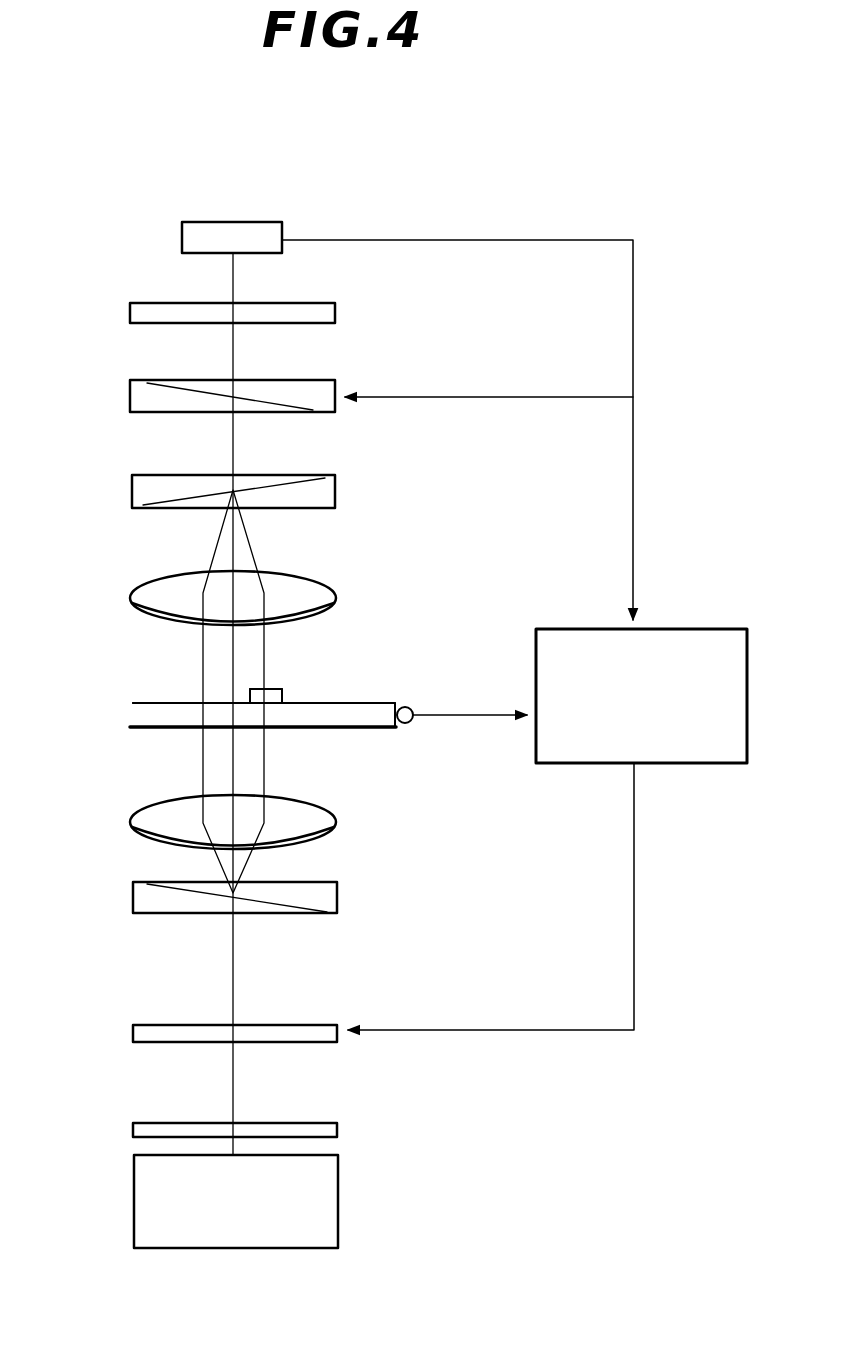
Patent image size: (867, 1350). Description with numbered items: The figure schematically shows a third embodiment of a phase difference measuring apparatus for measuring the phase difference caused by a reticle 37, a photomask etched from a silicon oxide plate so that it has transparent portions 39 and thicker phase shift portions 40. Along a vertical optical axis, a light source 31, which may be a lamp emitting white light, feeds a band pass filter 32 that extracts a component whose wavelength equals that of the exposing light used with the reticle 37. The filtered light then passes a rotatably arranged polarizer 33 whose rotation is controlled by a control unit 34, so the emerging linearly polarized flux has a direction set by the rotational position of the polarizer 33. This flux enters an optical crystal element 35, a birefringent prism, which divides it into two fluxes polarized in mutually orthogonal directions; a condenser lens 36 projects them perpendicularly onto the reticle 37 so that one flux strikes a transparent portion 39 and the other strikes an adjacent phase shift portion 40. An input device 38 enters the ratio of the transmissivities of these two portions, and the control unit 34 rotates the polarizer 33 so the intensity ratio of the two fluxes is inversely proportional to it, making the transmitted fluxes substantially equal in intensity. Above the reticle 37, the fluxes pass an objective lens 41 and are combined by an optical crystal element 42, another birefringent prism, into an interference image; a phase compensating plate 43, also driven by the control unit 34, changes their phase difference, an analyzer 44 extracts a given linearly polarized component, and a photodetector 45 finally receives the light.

The light source 31 is at (134, 1202).
The band pass filter 32 is at (133, 1130).
The polarizer 33 is at (133, 1030).
The control unit 34 is at (700, 629).
The optical crystal element 35 is at (133, 896).
The condenser lens 36 is at (130, 822).
The reticle 37 is at (380, 693).
The input device 38 is at (411, 721).
The transparent portion 39 is at (165, 703).
The phase shift portion 40 is at (282, 690).
The objective lens 41 is at (140, 590).
The optical crystal element 42 is at (132, 492).
The phase compensating plate 43 is at (130, 397).
The analyzer 44 is at (130, 313).
The photodetector 45 is at (182, 236).